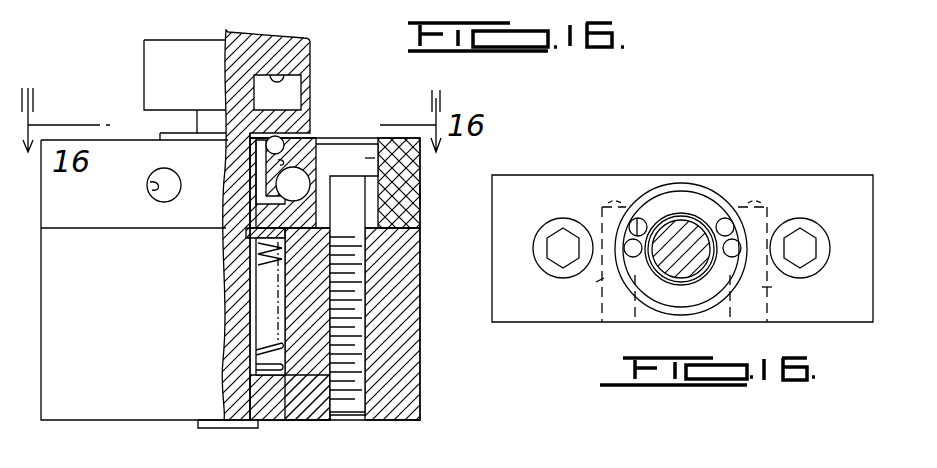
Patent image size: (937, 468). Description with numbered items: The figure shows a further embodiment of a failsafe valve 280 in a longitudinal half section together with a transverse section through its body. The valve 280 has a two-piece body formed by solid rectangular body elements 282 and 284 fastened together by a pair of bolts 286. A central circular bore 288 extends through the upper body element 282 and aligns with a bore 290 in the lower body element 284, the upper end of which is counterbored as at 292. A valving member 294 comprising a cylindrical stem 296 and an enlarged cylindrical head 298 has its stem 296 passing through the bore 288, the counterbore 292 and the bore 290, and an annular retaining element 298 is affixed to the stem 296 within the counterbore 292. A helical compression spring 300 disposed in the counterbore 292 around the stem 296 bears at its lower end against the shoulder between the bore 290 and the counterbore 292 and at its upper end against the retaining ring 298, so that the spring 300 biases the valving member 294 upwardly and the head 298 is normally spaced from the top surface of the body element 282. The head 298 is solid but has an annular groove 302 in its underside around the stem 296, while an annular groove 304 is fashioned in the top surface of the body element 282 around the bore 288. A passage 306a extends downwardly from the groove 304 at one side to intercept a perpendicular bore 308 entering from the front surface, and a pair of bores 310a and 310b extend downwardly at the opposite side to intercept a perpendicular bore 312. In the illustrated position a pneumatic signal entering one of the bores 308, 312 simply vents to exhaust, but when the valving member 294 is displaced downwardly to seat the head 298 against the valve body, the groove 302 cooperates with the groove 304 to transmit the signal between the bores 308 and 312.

In FIG. 15, the failsafe valve 280 is at (438, 415).
In FIG. 16, the failsafe valve 280 is at (815, 165).
In FIG. 15, the body element 282 is at (421, 194).
In FIG. 15, the body element 284 is at (420, 335).
In FIG. 15, the bolts 286 is at (366, 158).
In FIG. 16, the bolts 286 is at (555, 222).
In FIG. 15, the central circular bore 288 is at (233, 200).
In FIG. 16, the central circular bore 288 is at (670, 218).
In FIG. 15, the bore 290 is at (242, 432).
In FIG. 15, the counterbore 292 is at (370, 290).
In FIG. 15, the valving member 294 is at (144, 55).
In FIG. 15, the cylindrical stem 296 is at (198, 122).
In FIG. 16, the cylindrical stem 296 is at (697, 232).
In FIG. 15, the enlarged cylindrical head 298 is at (262, 33).
In FIG. 15, the helical compression spring 300 is at (280, 372).
In FIG. 15, the annular groove 302 is at (286, 73).
In FIG. 15, the annular groove 304 is at (266, 136).
In FIG. 16, the passage 306a is at (737, 222).
In FIG. 15, the bore 308 is at (148, 196).
In FIG. 16, the bore 308 is at (598, 282).
In FIG. 16, the bore 310a is at (640, 226).
In FIG. 15, the bore 310b is at (340, 132).
In FIG. 16, the bore 310b is at (726, 250).
In FIG. 15, the bore 312 is at (296, 196).
In FIG. 16, the bore 312 is at (770, 285).